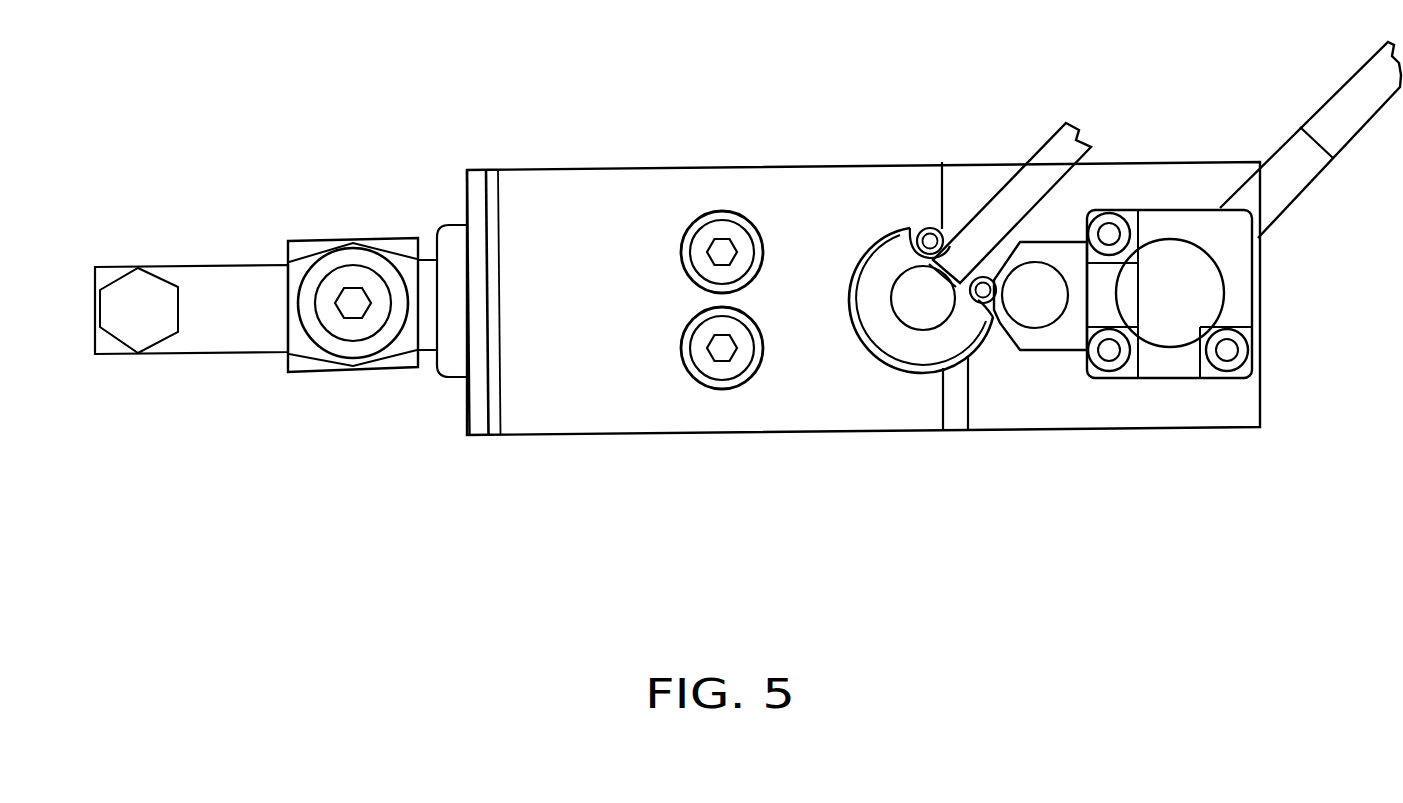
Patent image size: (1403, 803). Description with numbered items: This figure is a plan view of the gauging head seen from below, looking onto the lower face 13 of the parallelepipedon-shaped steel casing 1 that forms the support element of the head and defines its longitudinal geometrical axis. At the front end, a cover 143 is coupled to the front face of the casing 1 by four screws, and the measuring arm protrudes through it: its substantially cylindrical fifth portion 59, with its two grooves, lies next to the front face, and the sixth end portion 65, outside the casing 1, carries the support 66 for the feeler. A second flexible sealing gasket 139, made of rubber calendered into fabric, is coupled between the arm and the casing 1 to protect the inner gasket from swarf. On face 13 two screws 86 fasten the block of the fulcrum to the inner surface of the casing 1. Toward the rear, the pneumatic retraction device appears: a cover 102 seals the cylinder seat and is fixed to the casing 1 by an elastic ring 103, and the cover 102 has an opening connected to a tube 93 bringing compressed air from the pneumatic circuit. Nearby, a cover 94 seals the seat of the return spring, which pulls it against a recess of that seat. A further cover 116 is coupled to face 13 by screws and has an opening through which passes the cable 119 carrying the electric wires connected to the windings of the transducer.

The casing 1 is at (612, 403).
The face 13 is at (863, 222).
The fifth portion 59 is at (430, 337).
The sixth end portion 65 is at (305, 343).
The support 66 is at (227, 320).
The screws 86 is at (721, 248).
The tube 93 is at (1038, 163).
The cover 94 is at (1060, 332).
The cover 102 is at (949, 232).
The elastic ring 103 is at (968, 430).
The cover 116 is at (1230, 307).
The cable 119 is at (1367, 88).
The second flexible sealing gasket 139 is at (452, 360).
The cover 143 is at (472, 200).